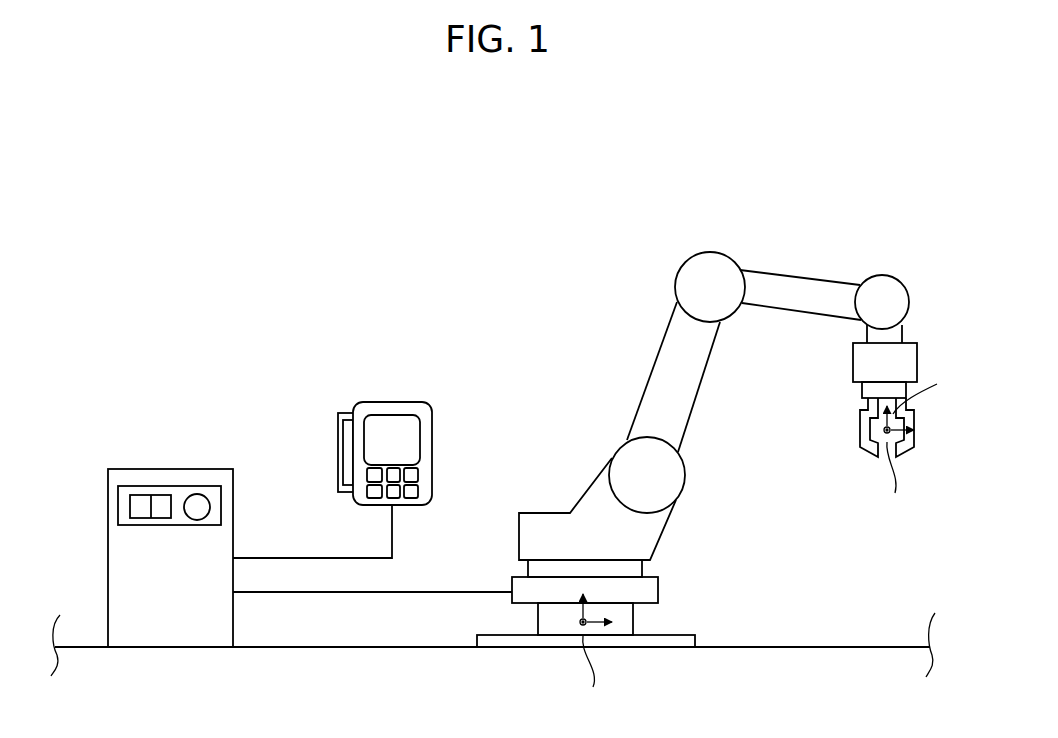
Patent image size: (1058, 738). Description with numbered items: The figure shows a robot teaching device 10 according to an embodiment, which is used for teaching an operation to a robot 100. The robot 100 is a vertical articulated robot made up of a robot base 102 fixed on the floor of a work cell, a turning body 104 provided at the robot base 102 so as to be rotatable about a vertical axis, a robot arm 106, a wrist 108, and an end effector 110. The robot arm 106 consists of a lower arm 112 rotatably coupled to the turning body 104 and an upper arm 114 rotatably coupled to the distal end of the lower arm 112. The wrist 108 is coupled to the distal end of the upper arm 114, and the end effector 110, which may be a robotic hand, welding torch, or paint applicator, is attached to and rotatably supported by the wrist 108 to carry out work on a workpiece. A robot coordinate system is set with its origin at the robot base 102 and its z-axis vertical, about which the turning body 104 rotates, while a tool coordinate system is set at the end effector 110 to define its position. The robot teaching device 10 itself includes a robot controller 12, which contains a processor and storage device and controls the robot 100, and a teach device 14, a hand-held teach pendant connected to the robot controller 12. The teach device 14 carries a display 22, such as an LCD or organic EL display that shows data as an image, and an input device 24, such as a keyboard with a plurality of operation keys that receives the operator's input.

The robot teaching device 10 is at (210, 286).
The robot controller 12 is at (170, 469).
The teach device 14 is at (428, 388).
The display 22 is at (392, 425).
The input device 24 is at (413, 477).
The robot 100 is at (638, 236).
The robot base 102 is at (659, 592).
The turning body 104 is at (542, 530).
The robot arm 106 is at (650, 334).
The wrist 108 is at (863, 332).
The end effector 110 is at (836, 430).
The lower arm 112 is at (657, 397).
The upper arm 114 is at (803, 292).